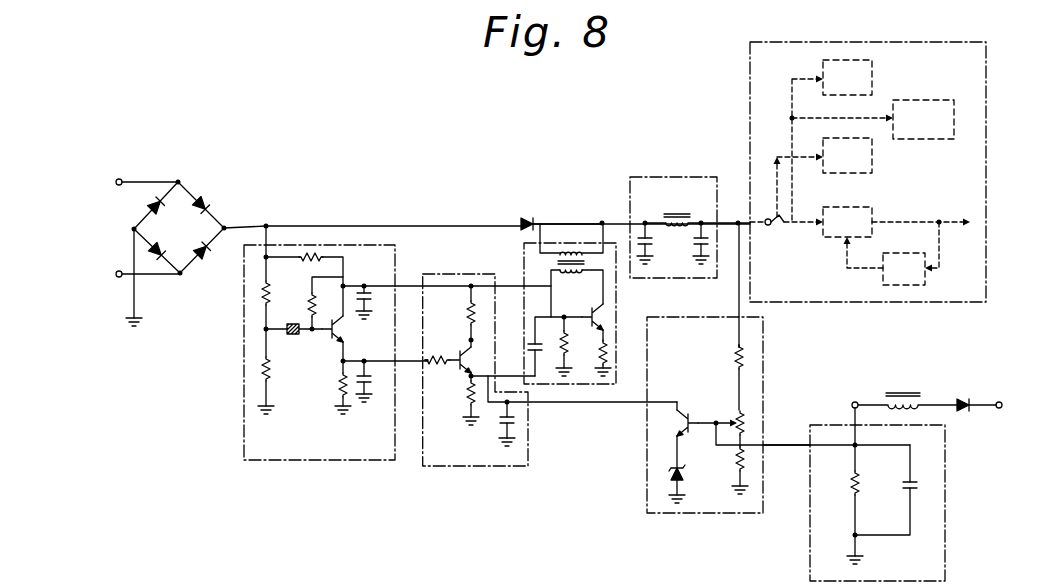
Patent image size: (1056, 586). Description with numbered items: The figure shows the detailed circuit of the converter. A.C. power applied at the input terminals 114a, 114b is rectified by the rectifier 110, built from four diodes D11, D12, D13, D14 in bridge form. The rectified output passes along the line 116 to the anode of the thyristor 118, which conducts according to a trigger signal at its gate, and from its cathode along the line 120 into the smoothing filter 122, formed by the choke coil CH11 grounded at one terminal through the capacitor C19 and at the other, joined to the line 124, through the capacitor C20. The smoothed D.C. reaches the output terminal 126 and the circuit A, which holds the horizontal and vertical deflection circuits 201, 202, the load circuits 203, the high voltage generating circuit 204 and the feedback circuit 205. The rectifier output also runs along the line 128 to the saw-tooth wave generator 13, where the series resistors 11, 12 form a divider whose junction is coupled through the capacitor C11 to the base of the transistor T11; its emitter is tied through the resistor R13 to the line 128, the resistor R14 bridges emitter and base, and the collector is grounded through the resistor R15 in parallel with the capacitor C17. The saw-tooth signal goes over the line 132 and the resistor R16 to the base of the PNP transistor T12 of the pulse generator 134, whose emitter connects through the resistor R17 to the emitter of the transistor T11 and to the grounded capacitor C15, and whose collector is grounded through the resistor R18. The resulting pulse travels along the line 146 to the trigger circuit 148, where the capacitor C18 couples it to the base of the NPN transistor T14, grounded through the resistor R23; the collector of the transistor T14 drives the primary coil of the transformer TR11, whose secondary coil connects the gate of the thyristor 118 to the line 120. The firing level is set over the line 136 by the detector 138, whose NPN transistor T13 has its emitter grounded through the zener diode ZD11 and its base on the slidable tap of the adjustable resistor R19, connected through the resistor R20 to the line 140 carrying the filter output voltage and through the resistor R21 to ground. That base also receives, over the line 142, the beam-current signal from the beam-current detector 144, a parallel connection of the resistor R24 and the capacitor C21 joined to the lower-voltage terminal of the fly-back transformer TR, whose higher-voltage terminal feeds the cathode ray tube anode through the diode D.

The rectifier 110 is at (191, 174).
The A.C. input terminal 114a is at (116, 181).
The A.C. input terminal 114b is at (116, 276).
The diode D11 is at (150, 206).
The diode D12 is at (150, 252).
The diode D13 is at (200, 258).
The diode D14 is at (207, 208).
The line 116 is at (462, 224).
The line 128 is at (269, 226).
The thyristor 118 is at (524, 209).
The line 120 is at (580, 223).
The smoothing filter 122 is at (630, 182).
The choke coil CH11 is at (664, 216).
The capacitor C20 is at (662, 243).
The capacitor C19 is at (699, 249).
The line 124 is at (737, 218).
The line 140 is at (740, 277).
The D.C. output terminal 126 is at (778, 226).
The circuit A is at (987, 63).
The horizontal deflection circuit 201 is at (873, 66).
The vertical deflection circuit 202 is at (873, 155).
The load circuits 203 is at (926, 100).
The high voltage generating circuit 204 is at (873, 209).
The feedback circuit 205 is at (927, 281).
The saw-tooth wave generator 13 is at (323, 462).
The resistor 11 is at (265, 297).
The resistor 12 is at (265, 366).
The resistor R13 is at (323, 257).
The resistor R14 is at (311, 296).
The resistor R15 is at (341, 394).
The coupling capacitor C11 is at (296, 335).
The transistor T11 is at (350, 323).
The capacitor C15 is at (367, 290).
The capacitor C17 is at (370, 386).
The pulse generator 134 is at (490, 467).
The resistor R17 is at (469, 309).
The line 132 is at (405, 359).
The transistor T12 is at (468, 358).
The resistor R16 is at (444, 379).
The resistor R18 is at (470, 410).
The line 146 is at (512, 378).
The trigger circuit 148 is at (524, 251).
The transformer TR11 is at (558, 264).
The line 136 is at (590, 400).
The transistor T14 is at (583, 311).
The resistor R23 is at (563, 337).
The capacitor C18 is at (541, 354).
The detector 138 is at (660, 515).
The resistor R20 is at (735, 356).
The adjustable resistor R19 is at (738, 416).
The resistor R21 is at (744, 466).
The transistor T13 is at (684, 427).
The zener diode ZD11 is at (670, 475).
The line 142 is at (787, 444).
The beam-current detector 144 is at (810, 575).
The resistor R24 is at (853, 492).
The capacitor C21 is at (914, 487).
The fly-back transformer TR is at (904, 388).
The diode D is at (965, 400).